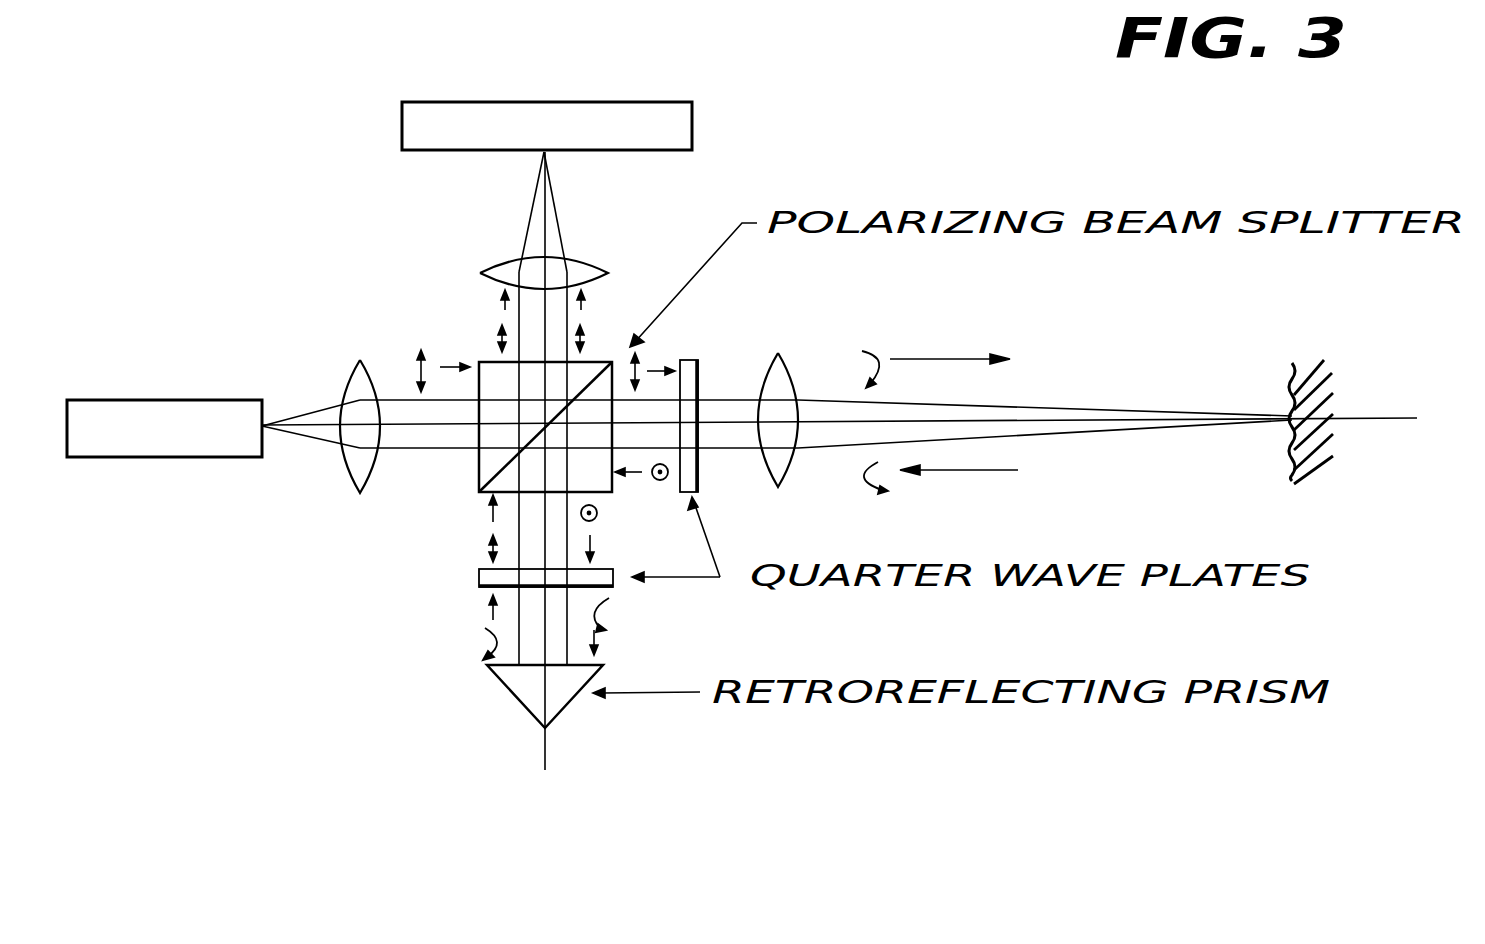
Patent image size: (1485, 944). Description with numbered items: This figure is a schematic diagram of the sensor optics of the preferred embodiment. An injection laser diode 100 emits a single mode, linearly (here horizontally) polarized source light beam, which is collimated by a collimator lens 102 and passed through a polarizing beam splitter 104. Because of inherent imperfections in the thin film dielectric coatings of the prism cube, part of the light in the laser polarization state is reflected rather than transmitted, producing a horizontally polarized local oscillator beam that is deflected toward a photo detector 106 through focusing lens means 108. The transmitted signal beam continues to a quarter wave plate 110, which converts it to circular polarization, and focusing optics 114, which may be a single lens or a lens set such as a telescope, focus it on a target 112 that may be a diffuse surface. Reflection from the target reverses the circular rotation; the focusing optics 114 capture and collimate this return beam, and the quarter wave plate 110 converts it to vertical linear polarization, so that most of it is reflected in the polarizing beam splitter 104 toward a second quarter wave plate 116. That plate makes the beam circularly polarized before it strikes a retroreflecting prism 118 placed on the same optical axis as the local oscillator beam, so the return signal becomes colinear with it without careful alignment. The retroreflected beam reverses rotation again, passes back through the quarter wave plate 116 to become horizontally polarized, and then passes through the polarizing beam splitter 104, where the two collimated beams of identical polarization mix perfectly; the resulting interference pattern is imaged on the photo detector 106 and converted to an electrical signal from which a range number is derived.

The injection laser diode 100 is at (213, 368).
The collimator lens 102 is at (393, 333).
The polarizing beam splitter 104 is at (488, 470).
The photo detector 106 is at (695, 102).
The focusing lens means 108 is at (590, 266).
The quarter wave plate 110 is at (700, 362).
The target 112 is at (1287, 383).
The focusing optics 114 is at (780, 365).
The quarter wave plate 116 is at (478, 578).
The retroreflecting prism 118 is at (552, 710).